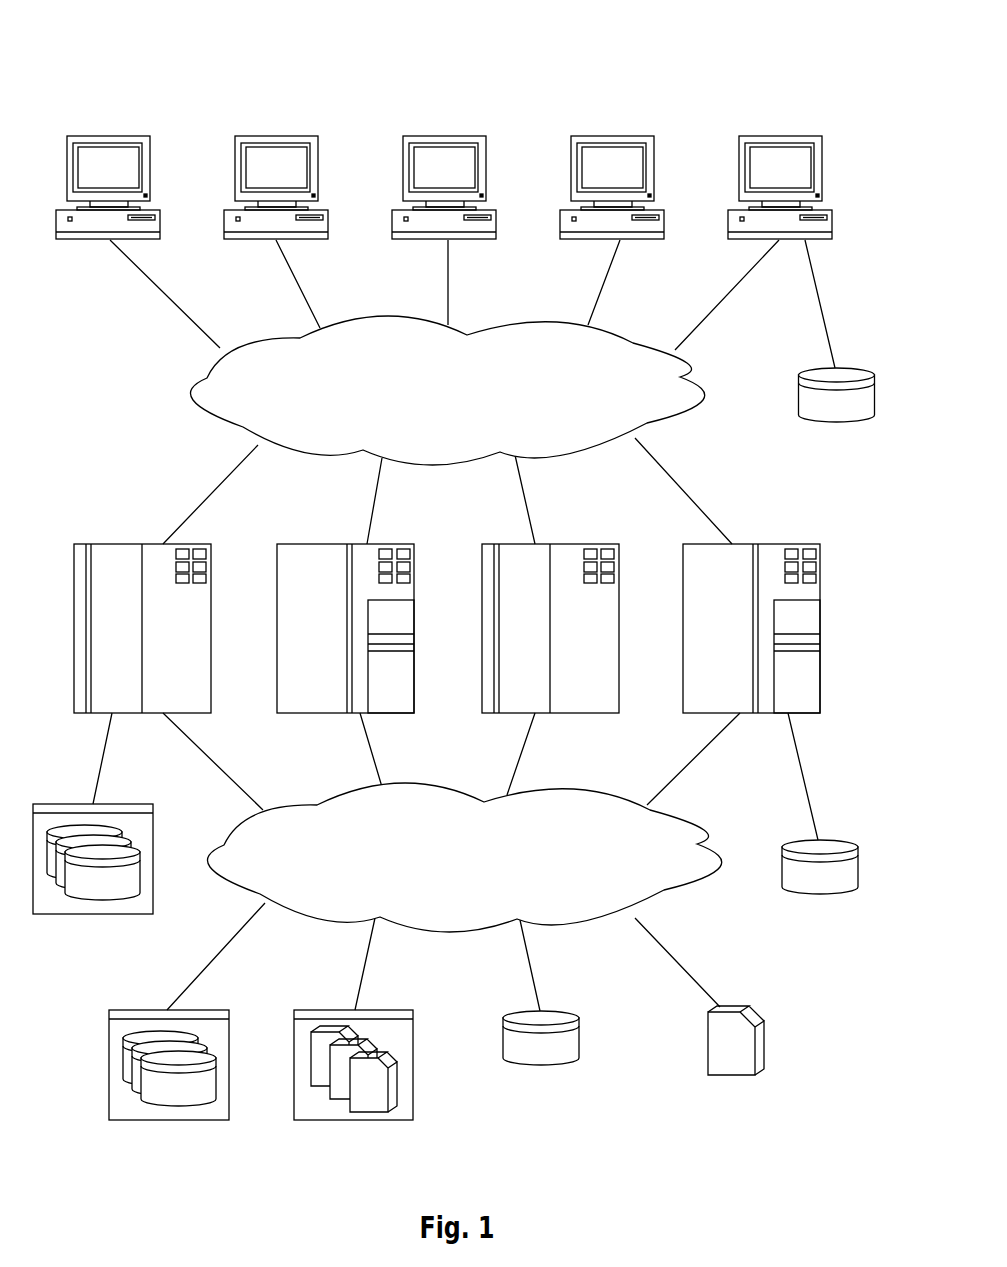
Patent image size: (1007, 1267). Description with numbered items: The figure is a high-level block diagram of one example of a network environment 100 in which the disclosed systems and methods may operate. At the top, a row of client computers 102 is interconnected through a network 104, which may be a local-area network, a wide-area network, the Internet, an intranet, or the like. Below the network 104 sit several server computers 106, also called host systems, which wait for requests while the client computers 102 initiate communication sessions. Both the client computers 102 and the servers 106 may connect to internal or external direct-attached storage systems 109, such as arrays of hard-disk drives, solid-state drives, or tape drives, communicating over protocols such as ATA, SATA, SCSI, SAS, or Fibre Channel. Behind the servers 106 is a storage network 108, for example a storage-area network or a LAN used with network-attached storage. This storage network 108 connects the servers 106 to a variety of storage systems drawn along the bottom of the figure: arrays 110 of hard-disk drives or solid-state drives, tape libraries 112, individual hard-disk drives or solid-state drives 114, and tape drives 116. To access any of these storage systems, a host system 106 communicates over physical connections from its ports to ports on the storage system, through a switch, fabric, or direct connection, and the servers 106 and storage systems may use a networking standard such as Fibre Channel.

The network environment 100 is at (183, 68).
The client computers 102 is at (92, 175).
The network 104 is at (587, 406).
The server computers 106 is at (102, 635).
The storage network 108 is at (568, 871).
The direct-attached storage systems 109 is at (93, 914).
The arrays of hard-disk drives or solid-state drives 110 is at (167, 1120).
The tape libraries 112 is at (355, 1120).
The individual hard-disk drives or solid-state drives 114 is at (542, 1070).
The tape drives 116 is at (730, 1075).